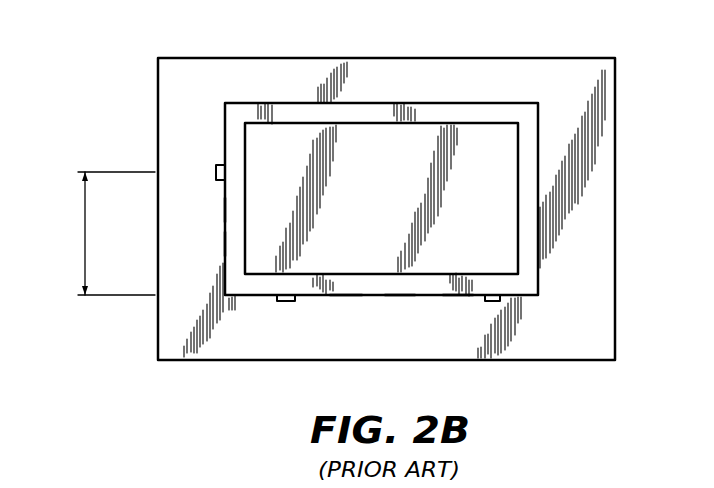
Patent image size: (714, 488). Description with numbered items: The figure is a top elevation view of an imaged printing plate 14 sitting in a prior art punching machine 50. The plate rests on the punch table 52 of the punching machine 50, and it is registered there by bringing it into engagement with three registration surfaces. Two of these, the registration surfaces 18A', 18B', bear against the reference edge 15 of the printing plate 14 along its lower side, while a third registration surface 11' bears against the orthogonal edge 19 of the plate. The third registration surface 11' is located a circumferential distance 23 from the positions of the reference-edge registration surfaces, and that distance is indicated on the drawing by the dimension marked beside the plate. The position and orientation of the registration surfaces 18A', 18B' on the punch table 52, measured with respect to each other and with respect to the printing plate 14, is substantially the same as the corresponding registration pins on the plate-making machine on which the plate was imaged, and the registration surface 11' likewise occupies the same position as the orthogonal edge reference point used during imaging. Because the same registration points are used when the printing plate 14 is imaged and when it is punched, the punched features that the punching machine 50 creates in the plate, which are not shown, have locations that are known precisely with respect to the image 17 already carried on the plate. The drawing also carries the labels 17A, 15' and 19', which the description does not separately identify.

The punching machine 50 is at (661, 72).
The punch table 52 is at (615, 267).
The printing plate 14 is at (456, 114).
The image 17 is at (290, 142).
The lower frame portion 17A is at (345, 277).
The registration surface 11' is at (167, 148).
The orthogonal edge 19 is at (167, 210).
The lower frame side member 19' is at (166, 246).
The circumferential distance 23 is at (83, 232).
The reference edge 15 is at (378, 345).
The second bottom fastener 15' is at (436, 345).
The registration surface 18A' is at (251, 345).
The registration surface 18B' is at (526, 345).